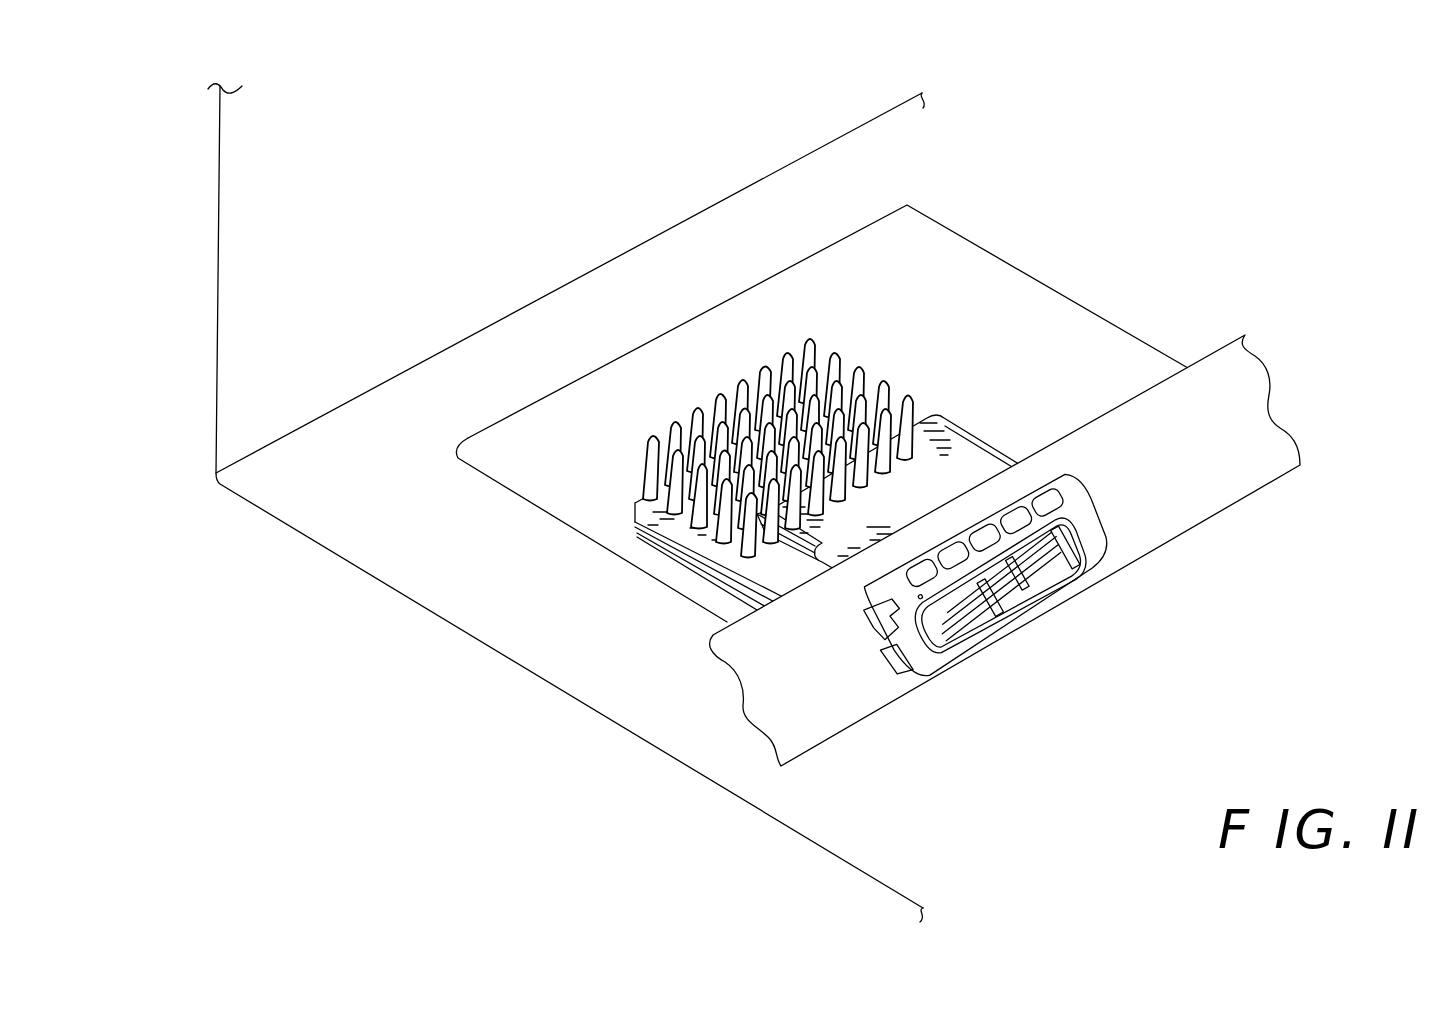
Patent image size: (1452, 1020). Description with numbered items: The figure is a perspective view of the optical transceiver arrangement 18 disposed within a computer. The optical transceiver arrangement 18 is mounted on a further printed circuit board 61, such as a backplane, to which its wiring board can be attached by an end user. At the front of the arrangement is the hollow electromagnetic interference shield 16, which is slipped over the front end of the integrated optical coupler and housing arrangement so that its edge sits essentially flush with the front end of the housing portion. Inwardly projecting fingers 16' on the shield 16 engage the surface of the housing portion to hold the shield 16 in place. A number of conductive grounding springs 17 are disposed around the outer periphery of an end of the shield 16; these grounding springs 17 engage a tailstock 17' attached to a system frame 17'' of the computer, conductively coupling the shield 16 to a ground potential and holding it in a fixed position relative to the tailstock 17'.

The printed circuit board 61 is at (980, 262).
The optical transceiver arrangement 18 is at (967, 420).
The conductive grounding springs 17 is at (1005, 550).
The tailstock 17' is at (857, 775).
The system frame 17'' is at (547, 739).
The electromagnetic interference shield 16 is at (1045, 577).
The inwardly projecting fingers 16' is at (894, 686).